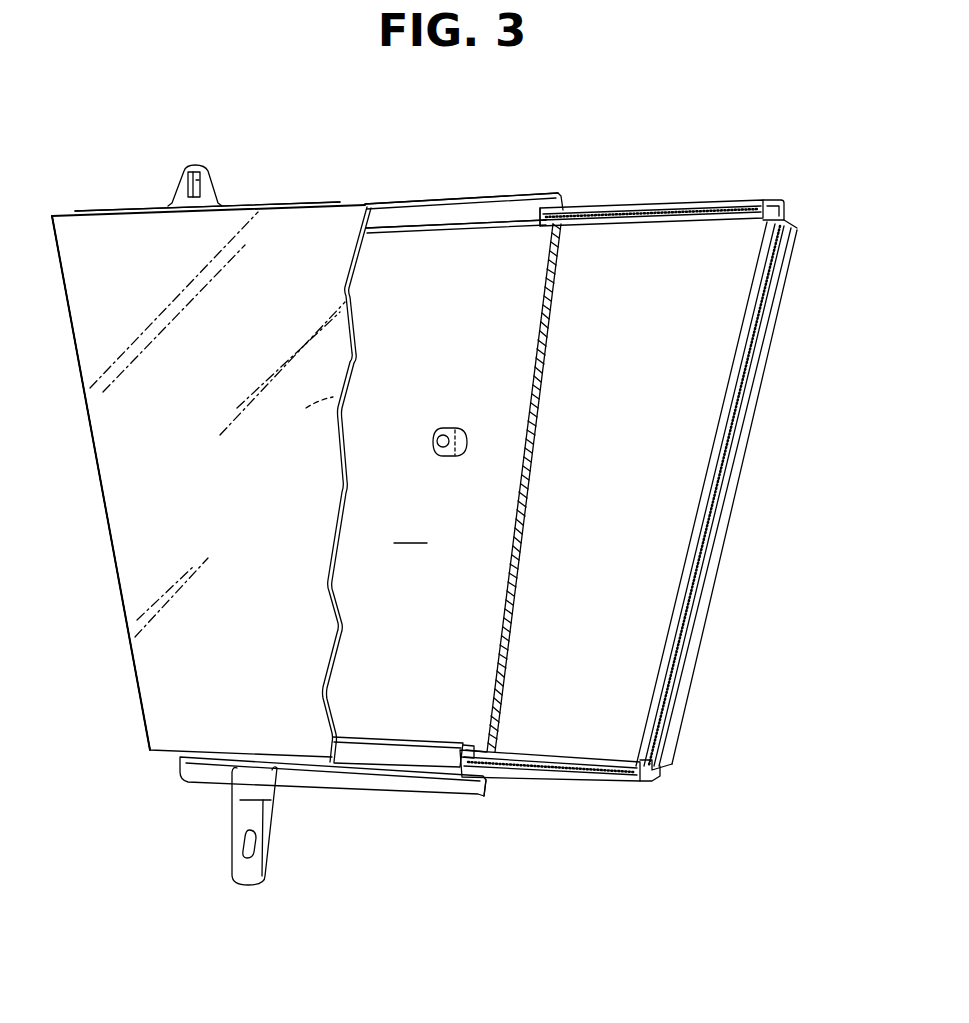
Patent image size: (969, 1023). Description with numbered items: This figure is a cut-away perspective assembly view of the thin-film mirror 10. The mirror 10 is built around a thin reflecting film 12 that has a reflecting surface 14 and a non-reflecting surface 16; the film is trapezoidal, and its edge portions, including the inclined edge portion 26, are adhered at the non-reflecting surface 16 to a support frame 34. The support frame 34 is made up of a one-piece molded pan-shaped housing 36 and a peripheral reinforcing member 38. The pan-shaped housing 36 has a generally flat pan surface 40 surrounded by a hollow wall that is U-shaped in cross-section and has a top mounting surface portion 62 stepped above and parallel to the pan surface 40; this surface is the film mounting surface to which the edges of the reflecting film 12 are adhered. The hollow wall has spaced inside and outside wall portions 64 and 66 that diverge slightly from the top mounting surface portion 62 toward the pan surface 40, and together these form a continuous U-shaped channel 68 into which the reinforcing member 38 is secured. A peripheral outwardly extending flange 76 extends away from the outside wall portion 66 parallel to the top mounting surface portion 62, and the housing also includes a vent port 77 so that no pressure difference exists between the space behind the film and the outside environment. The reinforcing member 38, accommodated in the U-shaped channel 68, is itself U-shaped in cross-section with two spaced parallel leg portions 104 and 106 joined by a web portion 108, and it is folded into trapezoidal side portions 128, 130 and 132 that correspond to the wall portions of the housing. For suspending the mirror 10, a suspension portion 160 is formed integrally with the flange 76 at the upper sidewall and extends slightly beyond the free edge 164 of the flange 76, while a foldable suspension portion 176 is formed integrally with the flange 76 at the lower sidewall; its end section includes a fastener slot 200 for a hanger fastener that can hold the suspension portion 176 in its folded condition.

The thin-film mirror 10 is at (665, 104).
The thin reflecting film 12 is at (292, 212).
The reflecting surface 14 is at (92, 346).
The non-reflecting surface 16 is at (345, 395).
The inclined edge portion 26 is at (98, 465).
The support frame 34 is at (606, 199).
The pan-shaped housing 36 is at (452, 197).
The reinforcing member 38 is at (667, 453).
The pan surface 40 is at (410, 528).
The top mounting surface portion 62 is at (386, 210).
The inside wall portion 64 is at (403, 232).
The outside wall portion 66 is at (345, 765).
The U-shaped channel 68 is at (470, 750).
The peripheral outwardly extending flange 76 is at (505, 195).
The vent port 77 is at (450, 425).
The leg portion 104 is at (778, 275).
The leg portion 106 is at (752, 345).
The web portion 108 is at (640, 225).
The side portion 128 is at (743, 199).
The side portion 130 is at (585, 752).
The side portion 132 is at (684, 530).
The suspension portion 160 is at (196, 163).
The free edge 164 is at (470, 792).
The suspension portion 176 is at (246, 887).
The fastener slot 200 is at (243, 850).